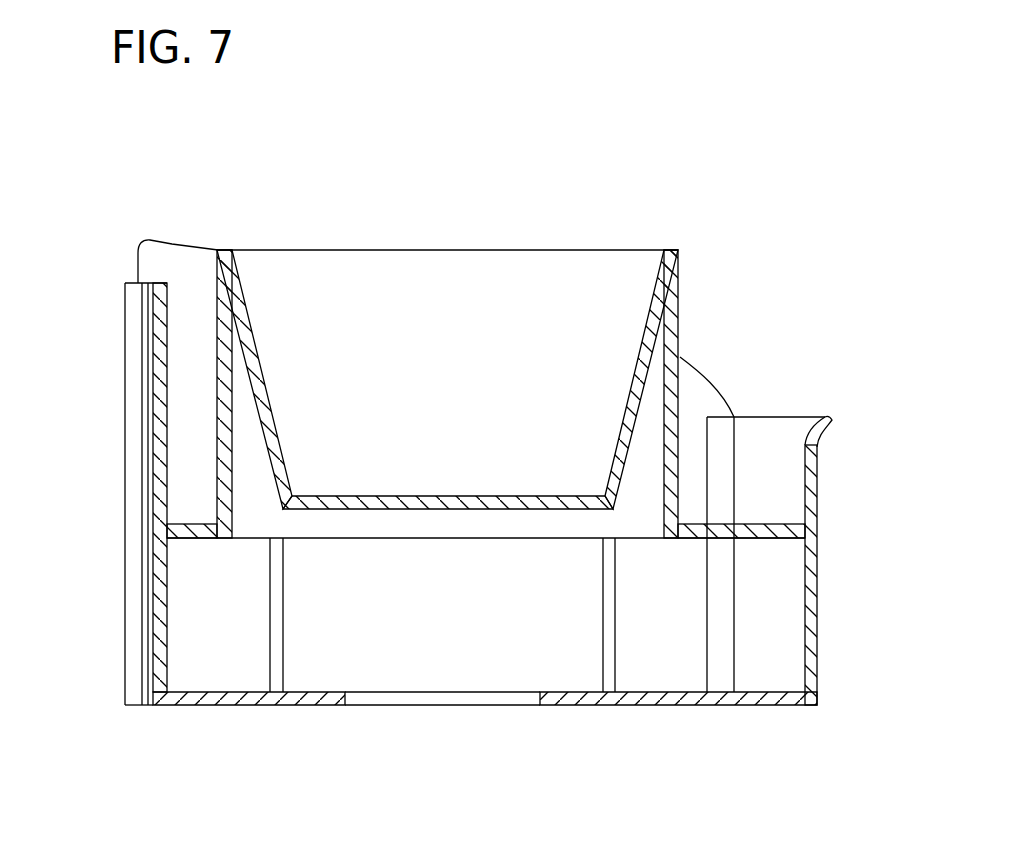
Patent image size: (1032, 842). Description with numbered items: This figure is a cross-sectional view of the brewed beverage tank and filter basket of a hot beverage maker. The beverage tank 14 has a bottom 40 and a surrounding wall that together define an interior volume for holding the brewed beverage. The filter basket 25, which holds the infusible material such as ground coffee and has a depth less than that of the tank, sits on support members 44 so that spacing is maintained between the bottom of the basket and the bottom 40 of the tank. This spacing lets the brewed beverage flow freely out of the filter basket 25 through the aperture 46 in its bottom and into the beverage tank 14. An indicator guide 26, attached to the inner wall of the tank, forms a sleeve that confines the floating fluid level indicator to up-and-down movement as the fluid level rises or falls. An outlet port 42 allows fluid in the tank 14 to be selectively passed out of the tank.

The beverage tank 14 is at (811, 497).
The filter basket 25 is at (672, 273).
The indicator guide 26 is at (721, 680).
The bottom 40 is at (202, 680).
The outlet port 42 is at (754, 700).
The support members 44 is at (281, 690).
The aperture 46 is at (442, 497).